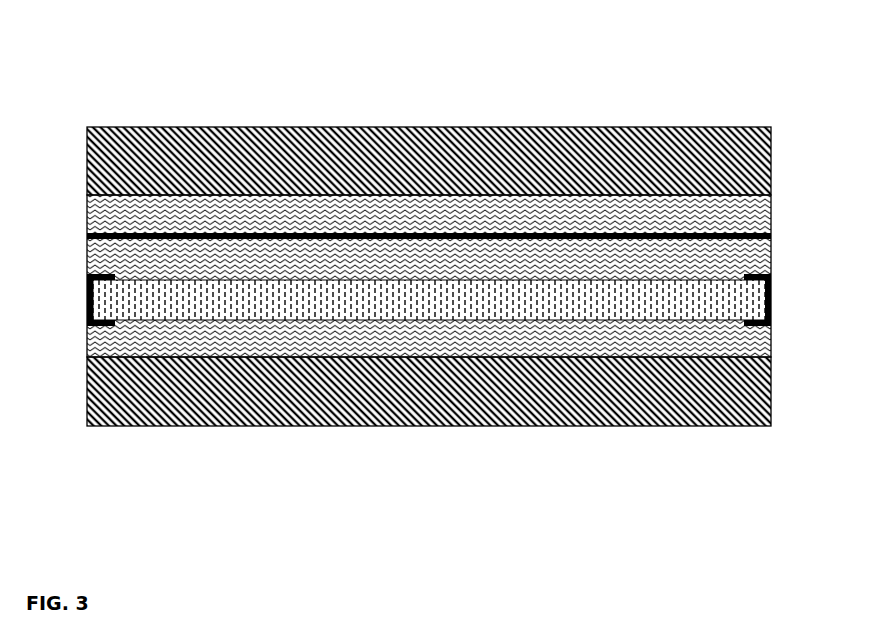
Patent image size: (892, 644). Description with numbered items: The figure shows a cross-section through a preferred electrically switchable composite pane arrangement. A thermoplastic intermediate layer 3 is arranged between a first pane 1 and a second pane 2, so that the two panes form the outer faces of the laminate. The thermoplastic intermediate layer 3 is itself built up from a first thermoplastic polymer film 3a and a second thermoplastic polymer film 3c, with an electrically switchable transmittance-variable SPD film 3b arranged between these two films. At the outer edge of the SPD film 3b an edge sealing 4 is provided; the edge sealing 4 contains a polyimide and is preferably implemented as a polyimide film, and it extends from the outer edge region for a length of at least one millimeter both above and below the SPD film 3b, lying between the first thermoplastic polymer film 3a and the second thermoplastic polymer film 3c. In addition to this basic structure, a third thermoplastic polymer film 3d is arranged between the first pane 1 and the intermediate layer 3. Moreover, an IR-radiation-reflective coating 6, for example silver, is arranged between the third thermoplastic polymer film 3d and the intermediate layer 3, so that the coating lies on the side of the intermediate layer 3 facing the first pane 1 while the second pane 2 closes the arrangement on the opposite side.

The first pane 1 is at (199, 121).
The second pane 2 is at (226, 433).
The thermoplastic intermediate layer 3 is at (771, 195).
The first thermoplastic polymer film 3a is at (86, 346).
The electrically switchable transmittance-variable SPD film 3b is at (170, 303).
The second thermoplastic polymer film 3c is at (104, 263).
The third thermoplastic polymer film 3d is at (86, 209).
The edge sealing 4 is at (86, 305).
The IR-radiation-reflective coating 6 is at (773, 232).